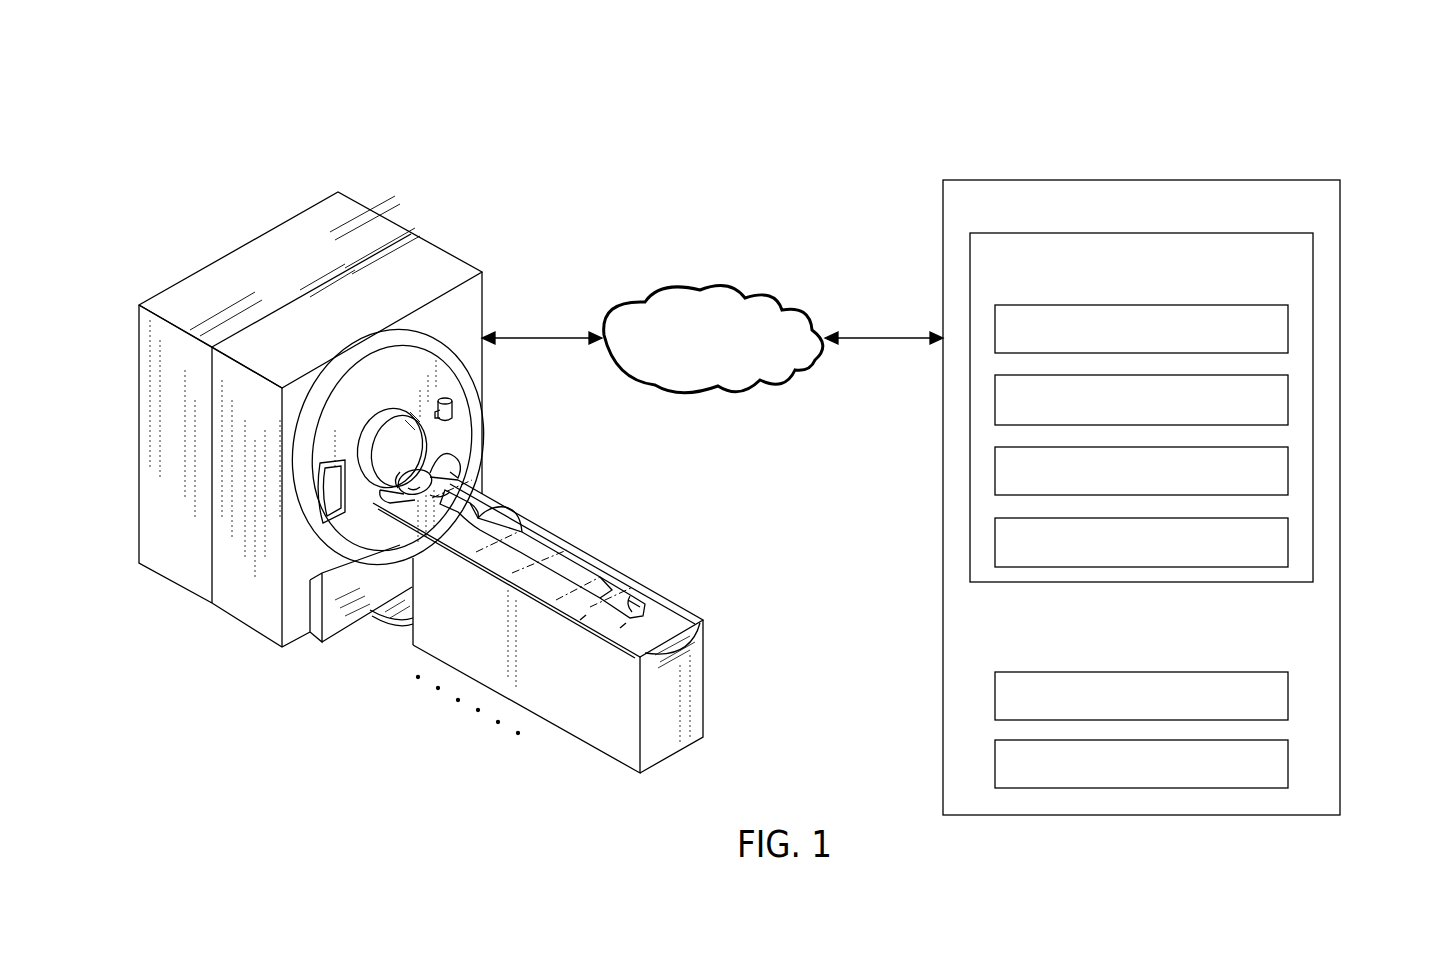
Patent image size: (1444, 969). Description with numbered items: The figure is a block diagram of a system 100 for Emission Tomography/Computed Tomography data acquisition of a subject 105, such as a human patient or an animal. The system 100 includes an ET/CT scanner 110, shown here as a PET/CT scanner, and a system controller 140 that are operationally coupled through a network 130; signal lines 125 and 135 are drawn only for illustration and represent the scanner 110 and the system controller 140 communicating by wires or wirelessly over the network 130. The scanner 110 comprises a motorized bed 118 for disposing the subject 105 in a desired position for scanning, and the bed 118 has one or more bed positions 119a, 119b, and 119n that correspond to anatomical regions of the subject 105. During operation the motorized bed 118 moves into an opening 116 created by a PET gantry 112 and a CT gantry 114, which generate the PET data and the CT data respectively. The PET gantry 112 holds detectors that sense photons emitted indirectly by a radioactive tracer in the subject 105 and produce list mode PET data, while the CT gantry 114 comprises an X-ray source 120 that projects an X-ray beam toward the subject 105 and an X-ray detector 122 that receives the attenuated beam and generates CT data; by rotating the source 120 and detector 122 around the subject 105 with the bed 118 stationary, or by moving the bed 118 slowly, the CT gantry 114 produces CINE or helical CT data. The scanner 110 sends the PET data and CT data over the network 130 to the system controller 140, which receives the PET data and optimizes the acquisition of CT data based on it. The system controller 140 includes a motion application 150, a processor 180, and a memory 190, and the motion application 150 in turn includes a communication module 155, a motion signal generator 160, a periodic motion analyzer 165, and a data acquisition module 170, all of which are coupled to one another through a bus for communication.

The system 100 is at (1323, 103).
The subject 105 is at (552, 527).
The ET/CT scanner 110 is at (243, 212).
The PET gantry 112 is at (381, 214).
The CT gantry 114 is at (449, 256).
The opening 116 is at (374, 445).
The motorized bed 118 is at (695, 654).
The bed position 119a is at (630, 606).
The bed position 119b is at (590, 602).
The bed position 119n is at (407, 492).
The X-ray source 120 is at (458, 402).
The X-ray detector 122 is at (334, 508).
The signal line 125 is at (540, 335).
The network 130 is at (685, 281).
The signal line 135 is at (885, 335).
The system controller 140 is at (1343, 203).
The motion application 150 is at (1315, 251).
The communication module 155 is at (1292, 326).
The motion signal generator 160 is at (1292, 398).
The periodic motion analyzer 165 is at (1292, 468).
The data acquisition module 170 is at (1292, 540).
The processor 180 is at (1292, 693).
The memory 190 is at (1292, 762).